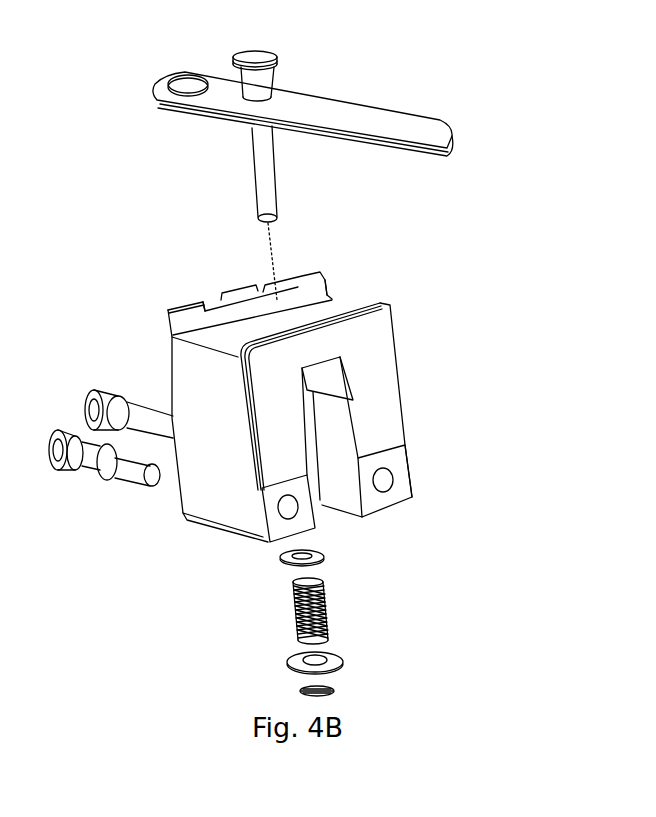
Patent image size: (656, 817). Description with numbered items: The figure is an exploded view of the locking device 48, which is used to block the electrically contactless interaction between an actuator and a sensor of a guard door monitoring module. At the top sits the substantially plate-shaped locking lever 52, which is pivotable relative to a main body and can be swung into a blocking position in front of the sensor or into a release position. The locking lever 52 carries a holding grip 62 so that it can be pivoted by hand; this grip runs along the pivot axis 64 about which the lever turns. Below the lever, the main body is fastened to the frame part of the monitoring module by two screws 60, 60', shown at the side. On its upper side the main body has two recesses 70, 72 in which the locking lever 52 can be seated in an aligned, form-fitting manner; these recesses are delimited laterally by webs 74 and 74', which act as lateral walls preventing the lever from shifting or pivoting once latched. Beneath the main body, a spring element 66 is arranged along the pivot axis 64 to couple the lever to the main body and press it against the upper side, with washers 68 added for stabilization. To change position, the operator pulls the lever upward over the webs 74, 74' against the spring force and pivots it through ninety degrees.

The locking device 48 is at (567, 48).
The locking lever 52 is at (353, 108).
The holding grip 62 is at (249, 54).
The pivot axis 64 is at (272, 247).
The recess 72 is at (337, 300).
The recess 70 is at (237, 293).
The web 74 is at (283, 390).
The web 74' is at (260, 269).
The screw 60 is at (89, 431).
The screw 60' is at (118, 388).
The washer 68 is at (322, 556).
The spring element 66 is at (327, 600).